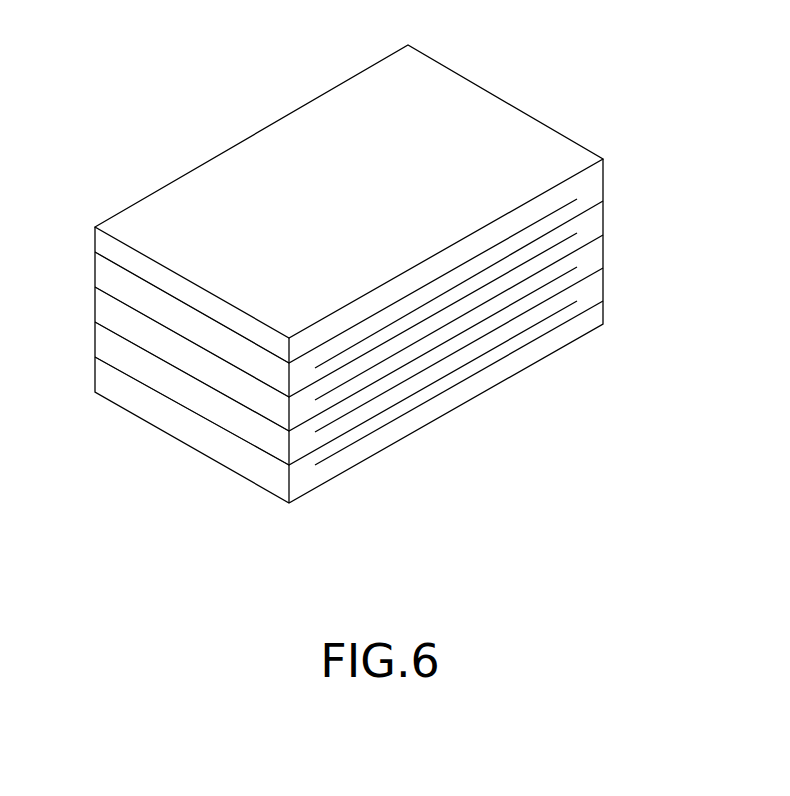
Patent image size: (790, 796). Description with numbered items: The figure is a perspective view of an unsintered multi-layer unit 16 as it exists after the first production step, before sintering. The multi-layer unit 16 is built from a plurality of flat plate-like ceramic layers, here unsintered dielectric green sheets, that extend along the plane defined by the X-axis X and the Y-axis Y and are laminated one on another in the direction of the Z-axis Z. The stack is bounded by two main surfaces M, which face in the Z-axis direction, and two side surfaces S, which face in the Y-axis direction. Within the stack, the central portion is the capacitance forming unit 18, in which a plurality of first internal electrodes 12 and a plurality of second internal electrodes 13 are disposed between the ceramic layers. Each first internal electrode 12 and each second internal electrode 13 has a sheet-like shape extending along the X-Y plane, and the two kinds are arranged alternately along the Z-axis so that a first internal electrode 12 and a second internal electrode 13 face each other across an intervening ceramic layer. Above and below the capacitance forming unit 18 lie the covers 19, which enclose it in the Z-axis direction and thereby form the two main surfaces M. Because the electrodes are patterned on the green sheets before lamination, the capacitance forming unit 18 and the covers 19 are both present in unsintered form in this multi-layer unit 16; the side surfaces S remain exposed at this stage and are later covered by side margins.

The first internal electrodes 12 is at (187, 305).
The second internal electrodes 13 is at (604, 201).
The multi-layer unit 16 is at (526, 86).
The capacitance forming unit 18 is at (89, 252).
The covers 19 is at (106, 247).
The main surfaces M is at (353, 107).
The side surfaces S is at (226, 148).
The X-axis X is at (603, 482).
The Y-axis Y is at (603, 482).
The Z-axis Z is at (603, 482).